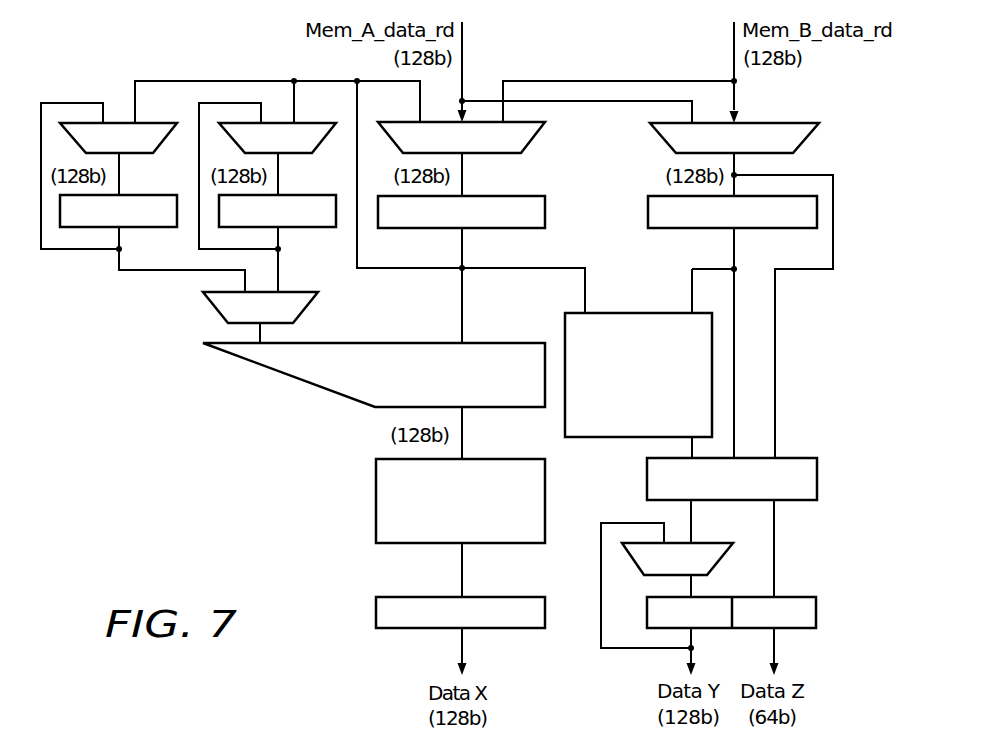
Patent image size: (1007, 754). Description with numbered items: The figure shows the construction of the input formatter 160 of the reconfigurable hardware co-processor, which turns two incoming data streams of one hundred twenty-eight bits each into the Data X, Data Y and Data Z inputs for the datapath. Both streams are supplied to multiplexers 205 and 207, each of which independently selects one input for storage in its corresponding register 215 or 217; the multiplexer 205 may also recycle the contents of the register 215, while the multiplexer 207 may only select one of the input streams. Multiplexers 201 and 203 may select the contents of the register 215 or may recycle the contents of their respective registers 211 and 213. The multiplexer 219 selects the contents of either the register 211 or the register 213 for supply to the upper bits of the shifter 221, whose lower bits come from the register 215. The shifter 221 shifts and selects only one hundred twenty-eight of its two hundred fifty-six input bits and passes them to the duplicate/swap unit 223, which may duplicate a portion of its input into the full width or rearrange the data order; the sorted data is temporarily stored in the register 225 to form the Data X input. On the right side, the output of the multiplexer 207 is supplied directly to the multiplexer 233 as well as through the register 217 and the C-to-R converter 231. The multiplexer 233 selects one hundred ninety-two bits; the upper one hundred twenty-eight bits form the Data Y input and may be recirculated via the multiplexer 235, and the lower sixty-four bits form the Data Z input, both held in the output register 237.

The input formatter 160 is at (205, 479).
The multiplexer 201 is at (82, 120).
The multiplexer 203 is at (240, 118).
The multiplexer 205 is at (536, 137).
The multiplexer 207 is at (810, 137).
The register 211 is at (94, 230).
The register 213 is at (303, 230).
The register 215 is at (546, 217).
The register 217 is at (648, 206).
The multiplexer 219 is at (213, 308).
The shifter 221 is at (403, 343).
The duplicate/swap unit 223 is at (376, 503).
The register 225 is at (376, 615).
The C-to-R converter (256b x 2 MUX and 64b FF) 231 is at (642, 313).
The multiplexer 233 is at (818, 480).
The multiplexer 235 is at (630, 542).
The output register 237 is at (818, 612).